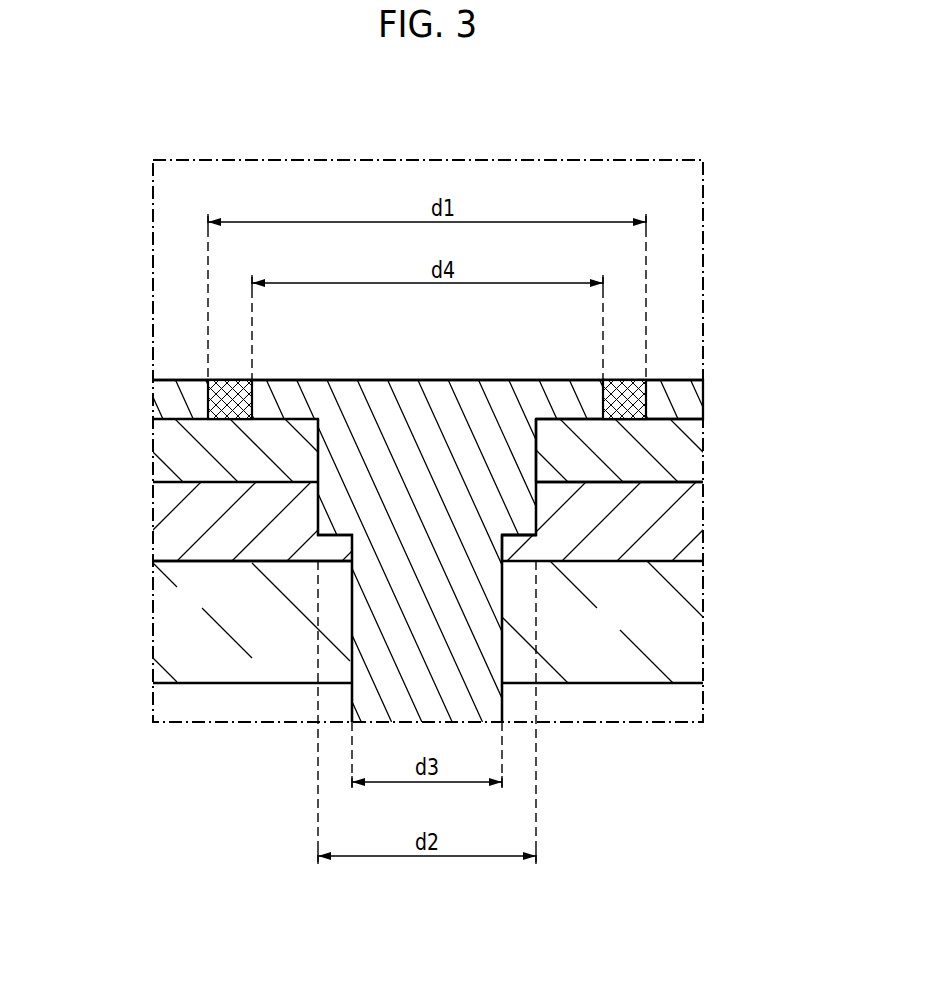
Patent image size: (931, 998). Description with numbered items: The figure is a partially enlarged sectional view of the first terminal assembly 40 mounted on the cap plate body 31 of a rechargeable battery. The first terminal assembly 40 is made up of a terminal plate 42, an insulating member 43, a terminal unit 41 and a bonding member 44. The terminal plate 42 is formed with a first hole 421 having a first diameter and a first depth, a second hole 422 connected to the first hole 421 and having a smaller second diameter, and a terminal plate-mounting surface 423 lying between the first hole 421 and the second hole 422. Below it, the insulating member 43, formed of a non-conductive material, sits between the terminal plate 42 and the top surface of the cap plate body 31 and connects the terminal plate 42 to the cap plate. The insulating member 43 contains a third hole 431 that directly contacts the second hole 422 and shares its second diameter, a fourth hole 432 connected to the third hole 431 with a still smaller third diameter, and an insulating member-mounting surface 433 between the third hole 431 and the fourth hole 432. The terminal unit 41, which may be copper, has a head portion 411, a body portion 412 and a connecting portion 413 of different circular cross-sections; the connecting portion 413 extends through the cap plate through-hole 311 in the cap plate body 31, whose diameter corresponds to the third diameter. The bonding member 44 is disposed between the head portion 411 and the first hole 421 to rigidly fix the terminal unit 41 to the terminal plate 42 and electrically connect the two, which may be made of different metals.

The cap plate body 31 is at (177, 652).
The cap plate through-hole 311 is at (353, 603).
The first terminal assembly 40 is at (197, 358).
The terminal unit 41 is at (430, 378).
The head portion 411 is at (507, 380).
The body portion 412 is at (338, 493).
The connecting portion 413 is at (467, 630).
The terminal plate 42 is at (217, 452).
The first hole 421 is at (648, 400).
The second hole 422 is at (537, 472).
The terminal plate-mounting surface 423 is at (587, 421).
The insulating member 43 is at (218, 528).
The third hole 431 is at (537, 508).
The fourth hole 432 is at (502, 545).
The insulating member-mounting surface 433 is at (513, 535).
The bonding member 44 is at (223, 403).